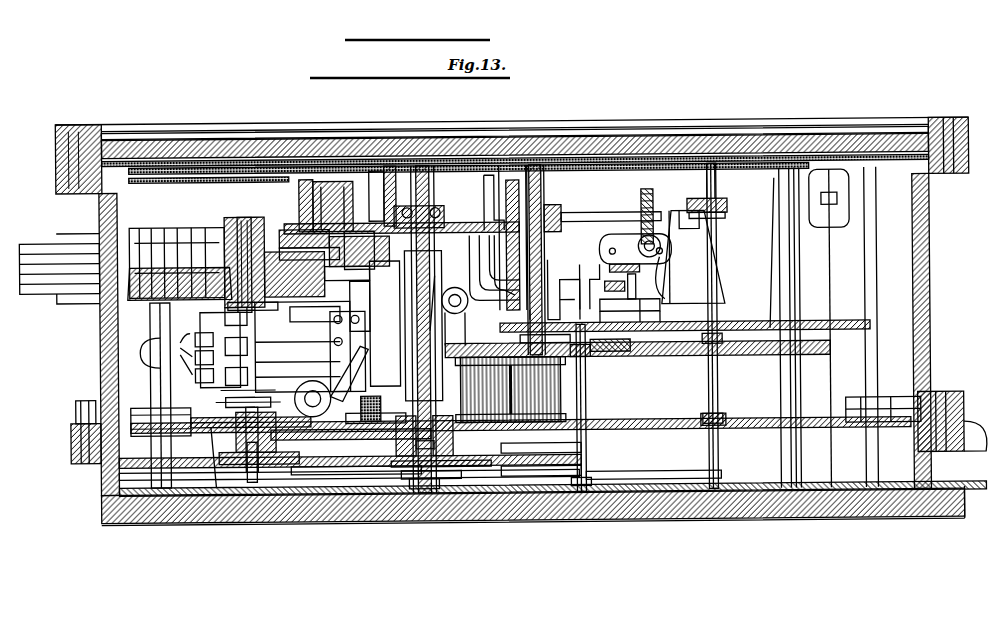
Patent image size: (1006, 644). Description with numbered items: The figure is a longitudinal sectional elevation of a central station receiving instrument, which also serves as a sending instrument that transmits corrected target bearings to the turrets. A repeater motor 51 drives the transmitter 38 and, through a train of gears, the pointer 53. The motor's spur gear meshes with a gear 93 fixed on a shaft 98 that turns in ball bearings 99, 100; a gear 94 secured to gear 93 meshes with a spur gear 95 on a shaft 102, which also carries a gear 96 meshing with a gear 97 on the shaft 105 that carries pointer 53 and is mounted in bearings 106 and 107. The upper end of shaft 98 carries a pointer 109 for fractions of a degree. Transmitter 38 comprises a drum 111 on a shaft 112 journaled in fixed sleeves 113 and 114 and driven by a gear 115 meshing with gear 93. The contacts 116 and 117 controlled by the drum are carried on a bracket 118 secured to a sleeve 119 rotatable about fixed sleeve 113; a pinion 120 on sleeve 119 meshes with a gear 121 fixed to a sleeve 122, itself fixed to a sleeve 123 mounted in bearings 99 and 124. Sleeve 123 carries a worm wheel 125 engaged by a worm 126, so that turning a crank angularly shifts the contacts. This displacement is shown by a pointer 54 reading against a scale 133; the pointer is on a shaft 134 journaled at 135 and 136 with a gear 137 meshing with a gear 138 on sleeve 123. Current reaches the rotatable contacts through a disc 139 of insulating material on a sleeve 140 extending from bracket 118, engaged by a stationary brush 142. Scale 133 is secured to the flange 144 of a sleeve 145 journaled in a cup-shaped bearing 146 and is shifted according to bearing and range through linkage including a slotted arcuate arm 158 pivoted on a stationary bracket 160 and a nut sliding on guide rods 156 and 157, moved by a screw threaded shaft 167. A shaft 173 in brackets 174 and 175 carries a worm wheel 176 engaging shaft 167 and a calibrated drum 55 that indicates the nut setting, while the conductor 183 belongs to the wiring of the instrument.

The transmitter 38 is at (303, 346).
The repeater motor 51 is at (560, 388).
The pointer 53 is at (650, 162).
The pointer 54 is at (218, 172).
The calibrated drum 55 is at (544, 185).
The gear 93 is at (582, 452).
The gear 94 is at (400, 478).
The spur gear 95 is at (420, 466).
The gear 96 is at (595, 360).
The gear 97 is at (845, 326).
The shaft 98 is at (415, 337).
The ball bearing 99 is at (430, 208).
The ball bearing 100 is at (425, 492).
The shaft 102 is at (585, 410).
The shaft 105 is at (718, 375).
The bearing 106 is at (725, 191).
The bearing 107 is at (725, 428).
The pointer 109 is at (382, 163).
The drum 111 is at (230, 325).
The shaft 112 is at (252, 478).
The fixed sleeve 113 is at (225, 456).
The fixed sleeve 114 is at (235, 228).
The gear 115 is at (218, 470).
The contact 116 is at (176, 359).
The contact 117 is at (300, 340).
The bracket 118 is at (375, 404).
The sleeve 119 is at (210, 409).
The pinion 120 is at (235, 430).
The gear 121 is at (282, 468).
The sleeve 122 is at (402, 415).
The sleeve 123 is at (418, 356).
The bearing 124 is at (440, 418).
The worm wheel 125 is at (376, 323).
The worm 126 is at (451, 310).
The scale 133 is at (165, 182).
The shaft 134 is at (318, 196).
The bearing 135 is at (401, 235).
The bearing 136 is at (359, 250).
The gear 137 is at (370, 270).
The gear 138 is at (500, 256).
The disc 139 is at (143, 297).
The sleeve 140 is at (228, 304).
The stationary brush 142 is at (175, 235).
The flange 144 is at (300, 190).
The sleeve 145 is at (305, 230).
The cup-shaped bearing 146 is at (372, 192).
The guide rod 156 is at (610, 252).
The guide rod 157 is at (663, 254).
The slotted arcuate arm 158 is at (685, 314).
The stationary bracket 160 is at (595, 281).
The screw threaded shaft 167 is at (639, 245).
The shaft 173 is at (590, 220).
The bracket 174 is at (676, 212).
The bracket 175 is at (490, 218).
The worm wheel 176 is at (648, 192).
The conductor 183 is at (578, 322).